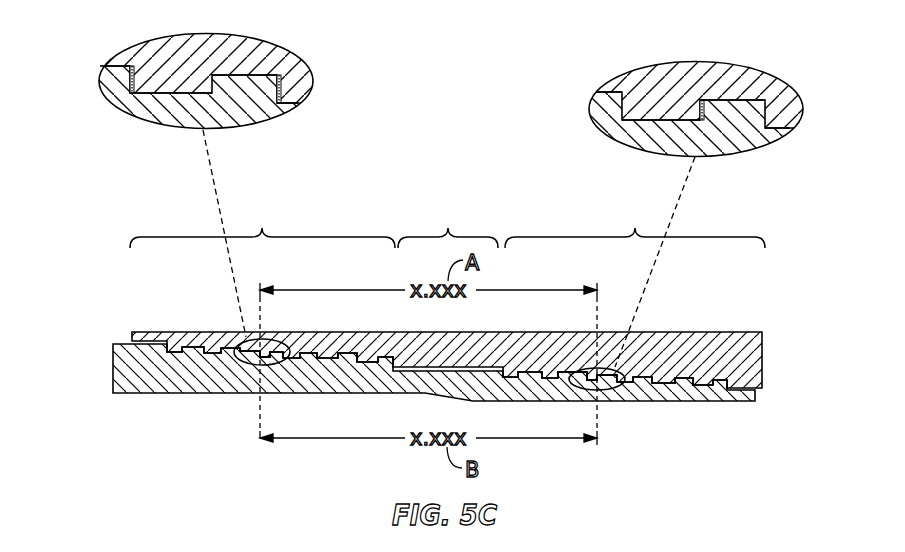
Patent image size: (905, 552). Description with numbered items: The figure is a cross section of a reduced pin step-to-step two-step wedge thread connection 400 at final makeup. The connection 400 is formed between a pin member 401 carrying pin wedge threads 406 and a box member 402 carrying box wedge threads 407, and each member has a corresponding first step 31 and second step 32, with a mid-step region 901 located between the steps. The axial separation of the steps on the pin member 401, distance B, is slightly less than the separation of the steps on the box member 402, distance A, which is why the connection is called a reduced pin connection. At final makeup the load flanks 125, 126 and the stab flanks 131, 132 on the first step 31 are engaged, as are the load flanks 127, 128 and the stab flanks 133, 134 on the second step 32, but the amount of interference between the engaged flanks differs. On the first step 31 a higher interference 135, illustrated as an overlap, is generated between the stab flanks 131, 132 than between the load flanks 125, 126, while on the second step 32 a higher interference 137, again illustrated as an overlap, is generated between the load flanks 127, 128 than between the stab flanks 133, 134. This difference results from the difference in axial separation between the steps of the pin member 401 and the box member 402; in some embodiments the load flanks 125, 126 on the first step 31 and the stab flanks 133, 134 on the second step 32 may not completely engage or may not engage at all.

The two-step wedge thread connection 400 is at (458, 316).
The pin member 401 is at (160, 386).
The box member 402 is at (752, 360).
The pin wedge threads 406 is at (266, 358).
The box wedge threads 407 is at (293, 353).
The first step 31 is at (262, 226).
The second step 32 is at (635, 226).
The mid-step region 901 is at (448, 226).
The load flank 125 is at (208, 84).
The load flank 126 is at (210, 87).
The load flank 127 is at (697, 106).
The load flank 128 is at (712, 118).
The stab flank 131 is at (130, 92).
The stab flank 132 is at (147, 70).
The stab flank 133 is at (617, 108).
The stab flank 134 is at (630, 100).
The higher interference 135 is at (130, 80).
The higher interference 137 is at (704, 108).